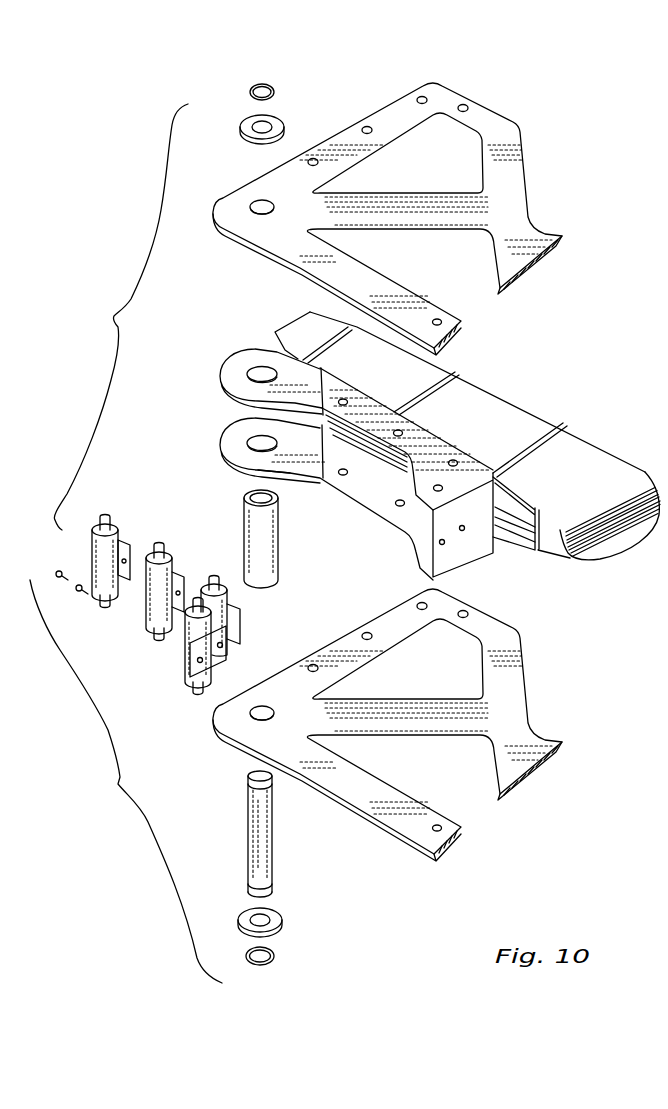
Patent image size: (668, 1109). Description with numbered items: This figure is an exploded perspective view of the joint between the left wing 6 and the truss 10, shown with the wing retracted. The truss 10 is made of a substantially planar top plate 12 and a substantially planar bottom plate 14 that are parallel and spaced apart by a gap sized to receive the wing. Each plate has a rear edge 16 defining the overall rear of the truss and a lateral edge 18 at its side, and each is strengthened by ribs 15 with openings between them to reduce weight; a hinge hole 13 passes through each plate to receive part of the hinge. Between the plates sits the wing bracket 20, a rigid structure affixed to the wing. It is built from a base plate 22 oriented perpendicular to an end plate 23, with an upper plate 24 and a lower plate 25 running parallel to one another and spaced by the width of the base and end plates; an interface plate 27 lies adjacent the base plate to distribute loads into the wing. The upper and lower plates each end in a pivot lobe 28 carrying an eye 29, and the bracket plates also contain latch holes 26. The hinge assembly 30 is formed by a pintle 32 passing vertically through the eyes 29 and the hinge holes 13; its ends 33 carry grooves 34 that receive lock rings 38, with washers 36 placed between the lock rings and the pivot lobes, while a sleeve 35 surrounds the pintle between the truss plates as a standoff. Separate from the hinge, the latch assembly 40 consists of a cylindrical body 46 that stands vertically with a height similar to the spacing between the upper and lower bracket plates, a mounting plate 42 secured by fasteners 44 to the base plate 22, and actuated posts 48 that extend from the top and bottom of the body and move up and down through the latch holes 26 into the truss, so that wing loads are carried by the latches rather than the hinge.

The left wing 6 is at (533, 412).
The truss 10 is at (538, 651).
The top plate 12 is at (530, 268).
The hinge holes 13 is at (252, 205).
The bottom plate 14 is at (532, 773).
The ribs 15 is at (402, 207).
The rear edges 16 is at (293, 270).
The lateral edges 18 is at (368, 117).
The wing bracket 20 is at (507, 565).
The base plate 22 is at (320, 380).
The end plate 23 is at (452, 560).
The upper plate 24 is at (420, 440).
The lower plate 25 is at (370, 510).
The latch holes 26 is at (348, 400).
The interface plate 27 is at (516, 505).
The pivot lobes 28 is at (262, 350).
The eye 29 is at (252, 368).
The hinge assembly 30 is at (318, 852).
The pintle 32 is at (250, 826).
The ends 33 is at (255, 772).
The grooves 34 is at (250, 798).
The sleeve 35 is at (276, 555).
The washers 36 is at (240, 130).
The lock rings 38 is at (250, 88).
The latch assembly 40 is at (124, 645).
The mounting plate 42 is at (128, 545).
The fasteners 44 is at (57, 578).
The cylindrical body 46 is at (94, 557).
The actuated posts 48 is at (103, 516).